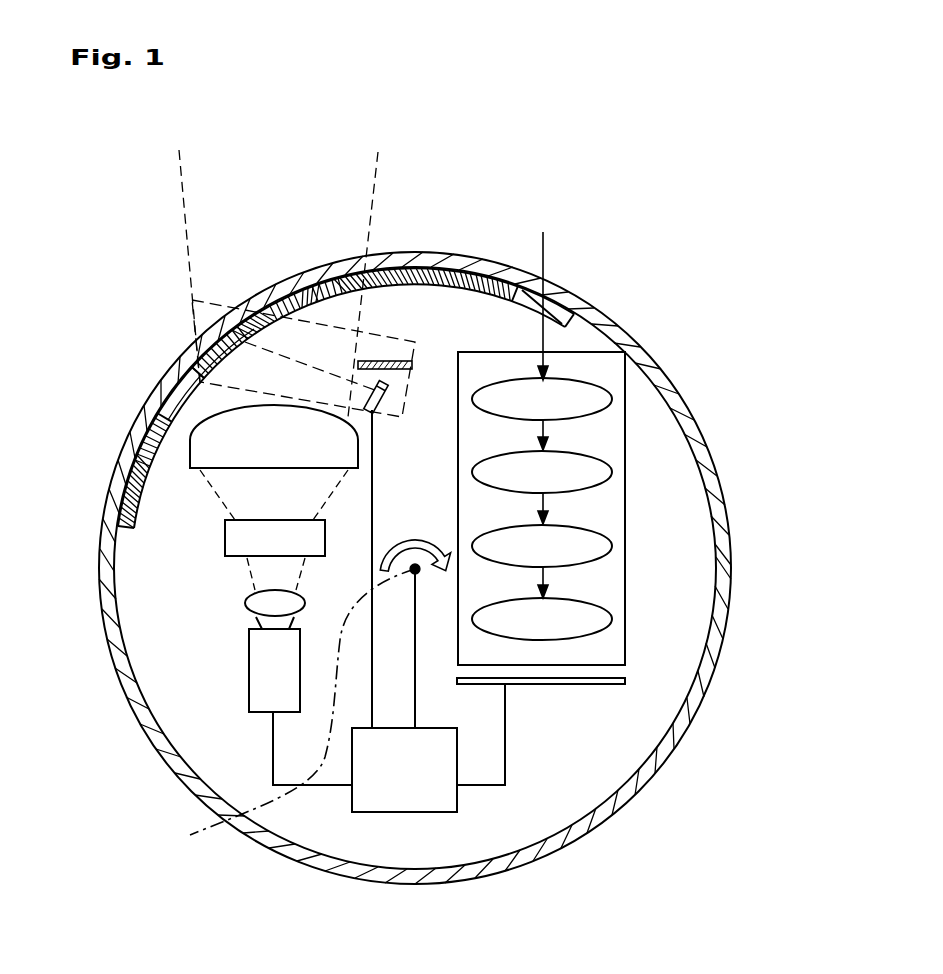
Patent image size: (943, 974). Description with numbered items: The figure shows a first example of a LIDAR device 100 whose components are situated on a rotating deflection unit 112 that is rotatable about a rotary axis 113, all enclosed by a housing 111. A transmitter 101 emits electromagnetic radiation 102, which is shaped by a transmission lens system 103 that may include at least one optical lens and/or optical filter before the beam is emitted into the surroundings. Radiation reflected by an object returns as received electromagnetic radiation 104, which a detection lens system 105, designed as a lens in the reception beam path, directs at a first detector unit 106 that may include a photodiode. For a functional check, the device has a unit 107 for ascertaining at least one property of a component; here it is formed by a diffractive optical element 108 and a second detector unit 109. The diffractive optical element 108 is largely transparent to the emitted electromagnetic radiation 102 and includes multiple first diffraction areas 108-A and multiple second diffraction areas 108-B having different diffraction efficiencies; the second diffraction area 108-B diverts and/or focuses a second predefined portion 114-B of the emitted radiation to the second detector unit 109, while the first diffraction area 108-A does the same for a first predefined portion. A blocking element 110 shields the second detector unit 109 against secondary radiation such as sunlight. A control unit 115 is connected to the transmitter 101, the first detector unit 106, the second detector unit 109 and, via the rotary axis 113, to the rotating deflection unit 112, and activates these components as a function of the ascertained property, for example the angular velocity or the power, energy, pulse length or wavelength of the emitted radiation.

The LIDAR device 100 is at (667, 162).
The transmitter 101 is at (273, 679).
The electromagnetic radiation 102 is at (178, 207).
The transmission lens system 103 is at (215, 447).
The received electromagnetic radiation 104 is at (545, 340).
The detection lens system 105 is at (607, 515).
The first detector unit 106 is at (625, 683).
The unit for ascertaining at least one property 107 is at (188, 333).
The diffractive optical element 108 is at (227, 310).
The first diffraction area 108-A is at (516, 294).
The second diffraction area 108-B is at (572, 296).
The second detector unit 109 is at (388, 403).
The blocking element 110 is at (383, 361).
The housing 111 is at (676, 388).
The rotating deflection unit 112 is at (598, 782).
The rotary axis 113 is at (290, 695).
The second predefined portion 114-B is at (275, 347).
The control unit 115 is at (403, 797).